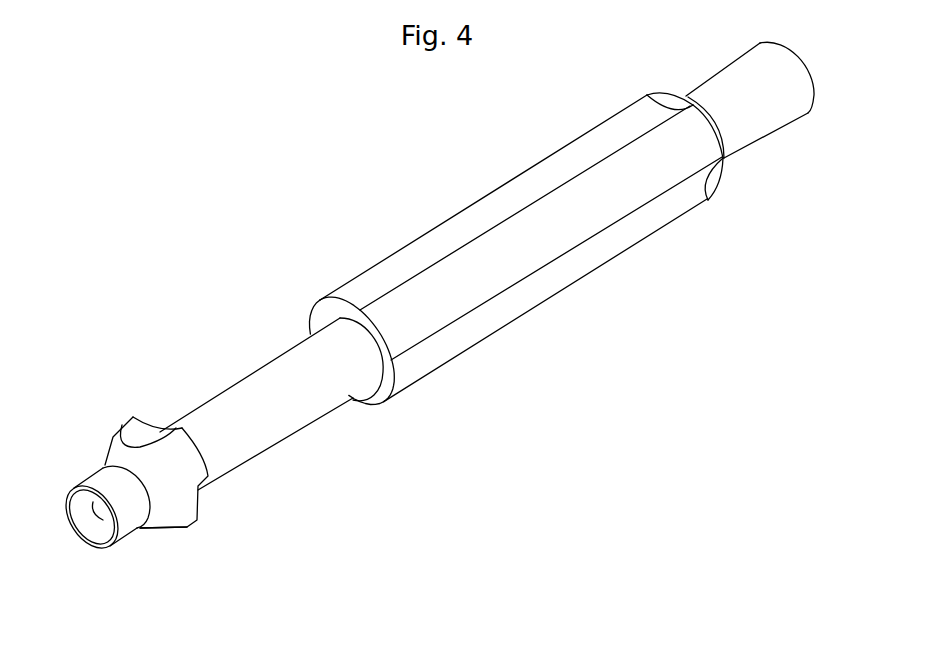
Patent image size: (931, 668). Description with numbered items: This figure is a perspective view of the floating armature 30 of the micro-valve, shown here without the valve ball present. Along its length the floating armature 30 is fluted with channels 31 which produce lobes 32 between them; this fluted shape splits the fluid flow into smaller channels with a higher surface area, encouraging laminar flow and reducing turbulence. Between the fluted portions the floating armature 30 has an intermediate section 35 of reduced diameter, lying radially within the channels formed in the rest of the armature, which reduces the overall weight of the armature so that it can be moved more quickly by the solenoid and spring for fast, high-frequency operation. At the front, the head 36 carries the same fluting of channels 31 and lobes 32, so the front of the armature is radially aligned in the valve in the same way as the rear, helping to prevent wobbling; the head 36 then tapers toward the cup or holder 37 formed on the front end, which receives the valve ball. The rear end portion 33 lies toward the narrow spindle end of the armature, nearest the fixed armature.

The floating armature 30 is at (195, 188).
The channels 31 is at (187, 508).
The lobes 32 is at (397, 316).
The cylindrical end portion 33 is at (783, 132).
The intermediate section 35 is at (298, 427).
The head 36 is at (160, 512).
The holder 37 is at (128, 522).